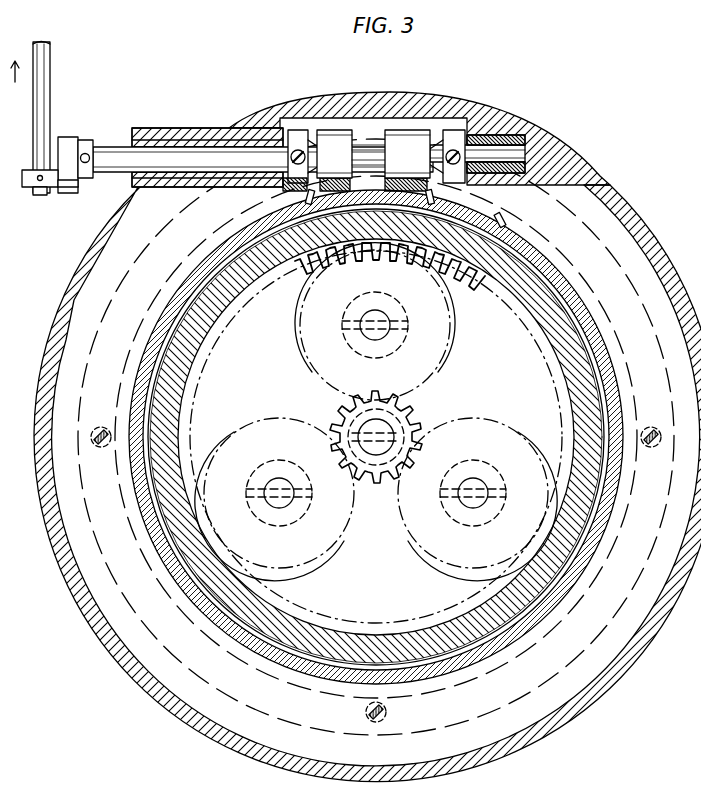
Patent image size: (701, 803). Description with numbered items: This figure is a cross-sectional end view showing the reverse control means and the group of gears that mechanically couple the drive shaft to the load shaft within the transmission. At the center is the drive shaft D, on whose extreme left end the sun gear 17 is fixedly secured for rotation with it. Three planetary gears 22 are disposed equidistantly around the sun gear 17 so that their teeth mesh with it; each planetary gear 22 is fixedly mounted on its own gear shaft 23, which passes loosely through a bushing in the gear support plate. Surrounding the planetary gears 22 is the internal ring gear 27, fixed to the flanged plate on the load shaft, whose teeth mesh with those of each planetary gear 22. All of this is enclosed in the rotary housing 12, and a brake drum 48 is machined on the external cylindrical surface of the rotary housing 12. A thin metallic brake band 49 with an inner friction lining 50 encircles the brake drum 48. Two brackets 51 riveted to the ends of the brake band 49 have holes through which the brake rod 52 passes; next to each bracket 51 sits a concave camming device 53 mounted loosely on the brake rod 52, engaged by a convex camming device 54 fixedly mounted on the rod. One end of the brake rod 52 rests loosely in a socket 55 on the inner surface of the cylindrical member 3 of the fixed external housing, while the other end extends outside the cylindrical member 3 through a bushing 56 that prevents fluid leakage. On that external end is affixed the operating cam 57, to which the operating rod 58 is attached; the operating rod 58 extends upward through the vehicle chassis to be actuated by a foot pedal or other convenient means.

The cylindrical member 3 is at (650, 237).
The rotary housing 12 is at (157, 380).
The sun gear 17 is at (415, 408).
The planetary gears 22 is at (287, 420).
The gear shafts 23 is at (371, 340).
The internal ring gear 27 is at (323, 262).
The brake drum 48 is at (597, 335).
The brake band 49 is at (603, 363).
The friction lining 50 is at (610, 392).
The brackets 51 is at (362, 130).
The brake rod 52 is at (112, 147).
The concave camming device 53 is at (403, 133).
The convex camming device 54 is at (440, 133).
The socket 55 is at (537, 150).
The bushing 56 is at (132, 176).
The operating cam 57 is at (67, 194).
The operating rod 58 is at (52, 48).
The drive shaft D is at (380, 443).